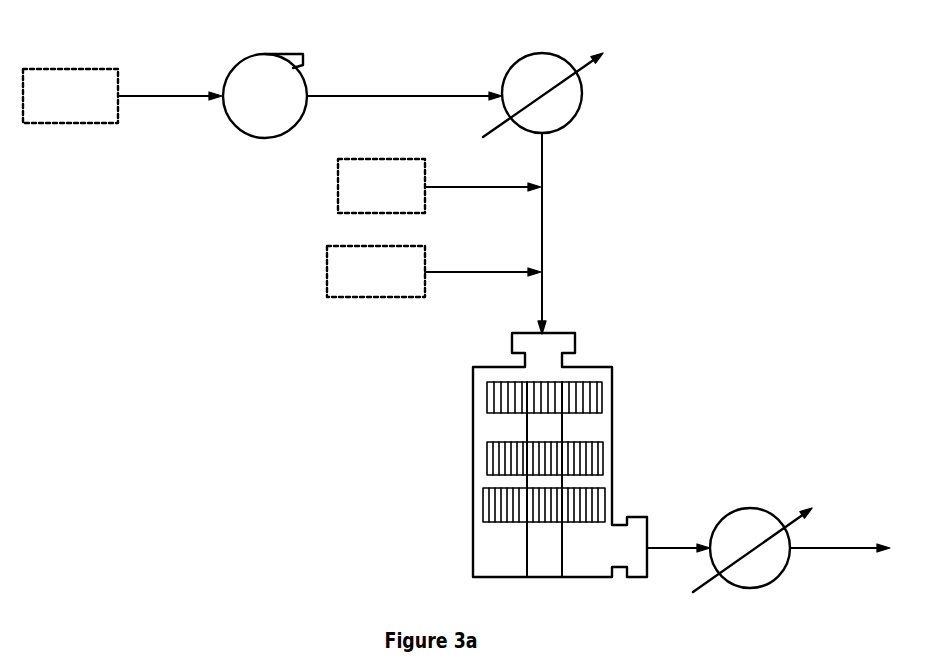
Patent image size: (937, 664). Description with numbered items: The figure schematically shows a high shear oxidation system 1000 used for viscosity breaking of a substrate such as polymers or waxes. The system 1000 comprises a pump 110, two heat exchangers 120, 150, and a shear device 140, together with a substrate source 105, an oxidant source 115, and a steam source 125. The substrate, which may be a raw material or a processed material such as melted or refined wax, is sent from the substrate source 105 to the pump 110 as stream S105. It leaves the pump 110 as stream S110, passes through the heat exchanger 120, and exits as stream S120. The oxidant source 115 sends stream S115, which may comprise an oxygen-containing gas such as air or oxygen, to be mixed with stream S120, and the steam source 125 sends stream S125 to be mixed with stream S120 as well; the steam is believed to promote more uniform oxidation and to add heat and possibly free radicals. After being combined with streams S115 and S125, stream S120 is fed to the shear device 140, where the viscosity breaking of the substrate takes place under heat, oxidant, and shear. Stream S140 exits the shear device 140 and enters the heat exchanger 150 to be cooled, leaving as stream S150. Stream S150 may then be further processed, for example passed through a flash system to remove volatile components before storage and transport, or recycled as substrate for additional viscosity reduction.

The substrate source 105 is at (70, 96).
The substrate stream S105 is at (170, 79).
The pump 110 is at (288, 108).
The pump outlet stream S110 is at (404, 78).
The heat exchanger 120 is at (568, 51).
The heated substrate stream S120 is at (575, 233).
The oxidant source 115 is at (381, 186).
The oxidant stream S115 is at (483, 173).
The steam source 125 is at (376, 271).
The steam stream S125 is at (483, 258).
The shear device 140 is at (598, 366).
The shear device outlet stream S140 is at (679, 528).
The heat exchanger 150 is at (731, 503).
The product stream S150 is at (840, 533).
The high shear oxidation system 1000 is at (726, 125).